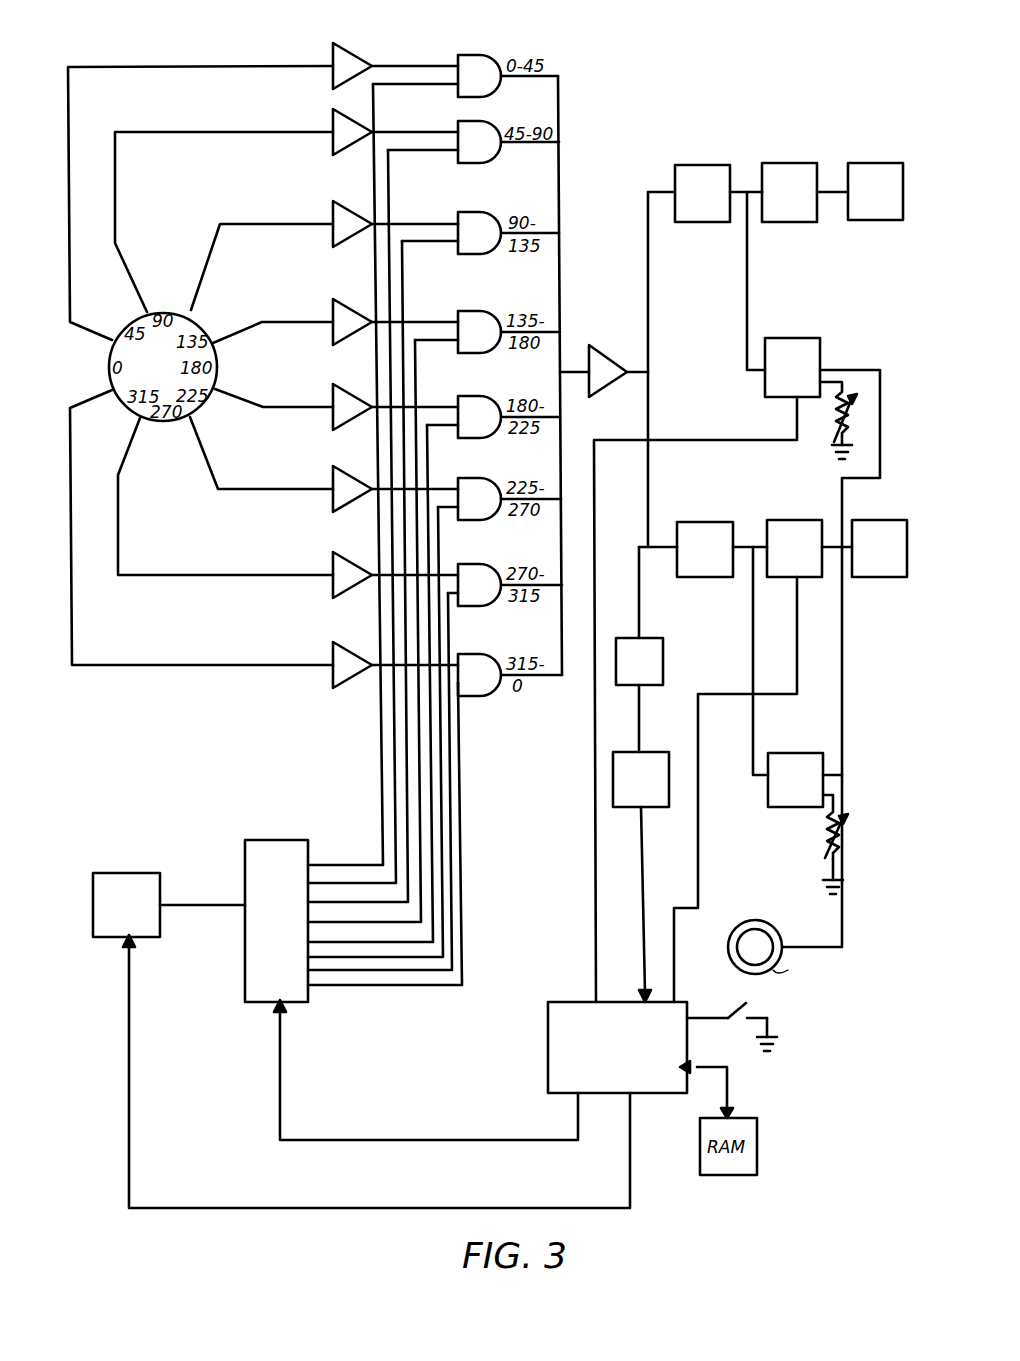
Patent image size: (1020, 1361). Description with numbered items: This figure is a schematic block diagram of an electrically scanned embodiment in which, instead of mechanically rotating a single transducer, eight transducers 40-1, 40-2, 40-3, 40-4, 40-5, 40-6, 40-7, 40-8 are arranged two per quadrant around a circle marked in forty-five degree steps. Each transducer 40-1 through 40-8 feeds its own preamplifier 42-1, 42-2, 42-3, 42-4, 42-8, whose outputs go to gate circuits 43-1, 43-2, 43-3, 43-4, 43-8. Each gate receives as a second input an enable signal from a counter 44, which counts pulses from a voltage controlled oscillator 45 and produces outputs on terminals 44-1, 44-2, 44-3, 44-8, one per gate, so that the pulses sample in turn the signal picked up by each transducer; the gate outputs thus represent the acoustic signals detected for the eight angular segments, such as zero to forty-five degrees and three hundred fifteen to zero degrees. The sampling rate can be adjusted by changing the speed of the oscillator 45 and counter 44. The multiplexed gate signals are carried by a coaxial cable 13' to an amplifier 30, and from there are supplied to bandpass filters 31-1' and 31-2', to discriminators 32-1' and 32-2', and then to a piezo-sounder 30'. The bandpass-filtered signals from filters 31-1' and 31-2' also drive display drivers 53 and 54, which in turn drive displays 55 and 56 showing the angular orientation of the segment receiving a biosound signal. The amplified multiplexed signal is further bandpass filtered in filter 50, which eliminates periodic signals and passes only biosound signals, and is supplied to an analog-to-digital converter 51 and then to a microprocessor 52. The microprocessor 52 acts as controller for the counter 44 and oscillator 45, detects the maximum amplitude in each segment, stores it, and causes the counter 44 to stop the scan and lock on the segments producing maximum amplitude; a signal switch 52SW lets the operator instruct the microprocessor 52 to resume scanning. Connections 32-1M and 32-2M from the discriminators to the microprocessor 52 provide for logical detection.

The coaxial cable 13' is at (581, 336).
The amplifier 30 is at (618, 379).
The piezo-sounder 30' is at (809, 952).
The bandpass filter 31-1' is at (702, 178).
The bandpass filter 31-2' is at (705, 536).
The discriminator 32-1' is at (801, 354).
The connection 32-1M is at (665, 446).
The discriminator 32-2' is at (797, 767).
The connection 32-2M is at (708, 856).
The transducer 40-1 is at (110, 336).
The transducer 40-2 is at (150, 308).
The transducer 40-3 is at (180, 300).
The transducer 40-4 is at (215, 332).
The transducer 40-5 is at (212, 393).
The transducer 40-6 is at (182, 422).
The transducer 40-7 is at (133, 418).
The transducer 40-8 is at (111, 390).
The preamplifier 42-1 is at (350, 58).
The preamplifier 42-2 is at (353, 110).
The preamplifier 42-3 is at (360, 198).
The preamplifier 42-4 is at (357, 300).
The preamplifier 42-8 is at (358, 640).
The gate circuit 43-1 is at (492, 60).
The gate circuit 43-2 is at (500, 126).
The gate circuit 43-3 is at (500, 215).
The gate circuit 43-4 is at (496, 314).
The gate circuit 43-8 is at (499, 658).
The counter 44 is at (257, 842).
The counter output terminal 44-1 is at (308, 860).
The counter output terminal 44-2 is at (312, 880).
The counter output terminal 44-3 is at (314, 900).
The counter output terminal 44-8 is at (312, 990).
The voltage controlled oscillator 45 is at (145, 866).
The bandpass filter 50 is at (678, 633).
The analog-to-digital converter 51 is at (671, 750).
The microprocessor 52 is at (580, 996).
The signal switch 52SW is at (732, 1008).
The display driver 53 is at (800, 158).
The display driver 54 is at (806, 520).
The display 55 is at (852, 156).
The display 56 is at (894, 520).